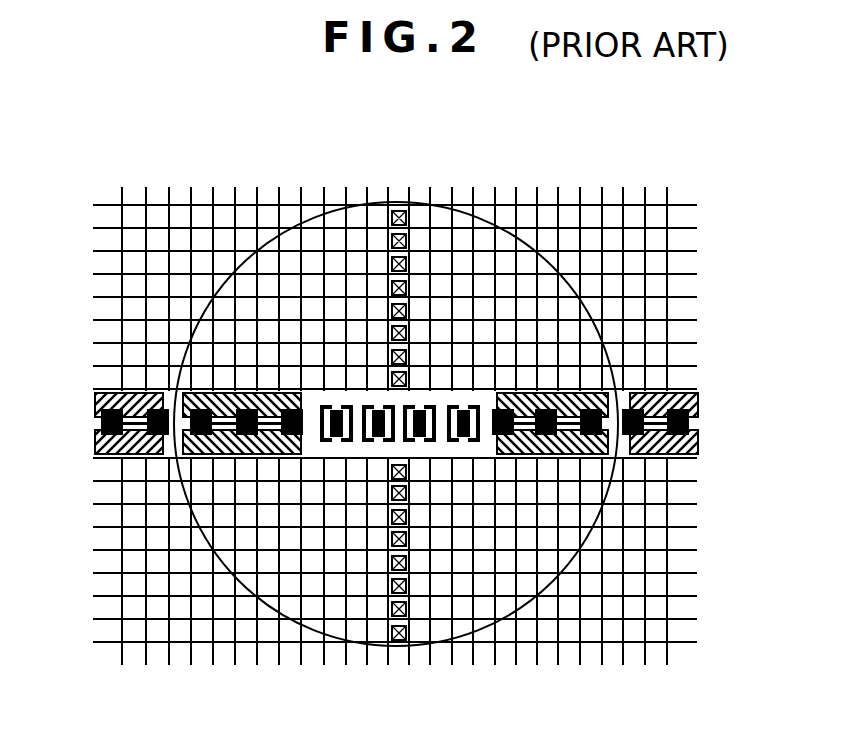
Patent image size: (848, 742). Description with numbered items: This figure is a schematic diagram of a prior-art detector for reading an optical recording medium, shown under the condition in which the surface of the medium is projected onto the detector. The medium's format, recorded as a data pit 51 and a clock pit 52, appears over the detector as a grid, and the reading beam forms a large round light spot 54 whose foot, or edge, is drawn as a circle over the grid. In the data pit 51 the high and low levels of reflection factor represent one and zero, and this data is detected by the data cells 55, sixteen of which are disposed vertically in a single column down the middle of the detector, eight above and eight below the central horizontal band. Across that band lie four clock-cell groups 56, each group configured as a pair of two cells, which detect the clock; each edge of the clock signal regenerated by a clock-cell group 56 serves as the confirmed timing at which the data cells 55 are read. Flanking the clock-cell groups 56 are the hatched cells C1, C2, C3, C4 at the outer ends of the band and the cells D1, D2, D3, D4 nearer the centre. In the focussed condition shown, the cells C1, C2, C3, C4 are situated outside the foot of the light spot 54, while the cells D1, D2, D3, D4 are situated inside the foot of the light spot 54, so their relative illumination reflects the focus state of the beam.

The data pit 51 is at (660, 244).
The clock pit 52 is at (692, 425).
The light spot 54 is at (417, 200).
The data cells 55 is at (392, 312).
The clock-cell groups 56 is at (465, 442).
The cell C1 is at (97, 401).
The cell C2 is at (97, 443).
The cell C3 is at (680, 398).
The cell C4 is at (680, 456).
The cell D1 is at (177, 391).
The cell D2 is at (187, 457).
The cell D3 is at (590, 395).
The cell D4 is at (603, 459).